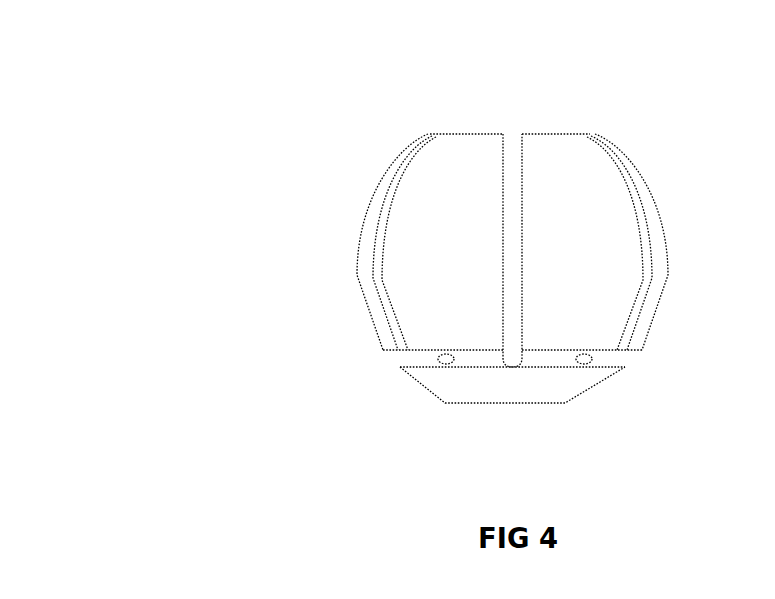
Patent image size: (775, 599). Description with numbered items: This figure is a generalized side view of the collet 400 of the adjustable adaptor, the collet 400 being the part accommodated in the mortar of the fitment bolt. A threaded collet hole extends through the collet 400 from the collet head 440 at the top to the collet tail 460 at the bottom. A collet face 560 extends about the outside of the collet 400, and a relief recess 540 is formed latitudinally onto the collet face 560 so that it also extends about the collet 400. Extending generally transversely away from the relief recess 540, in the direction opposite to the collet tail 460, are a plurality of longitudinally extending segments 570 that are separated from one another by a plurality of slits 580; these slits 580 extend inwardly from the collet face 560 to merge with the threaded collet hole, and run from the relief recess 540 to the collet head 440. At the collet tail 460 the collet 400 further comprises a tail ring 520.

The collet 400 is at (241, 120).
The collet head 440 is at (457, 134).
The longitudinally extending segments 570 is at (558, 120).
The collet face 560 is at (415, 255).
The slits 580 is at (660, 312).
The relief recess 540 is at (445, 362).
The tail ring 520 is at (575, 383).
The collet tail 460 is at (565, 405).